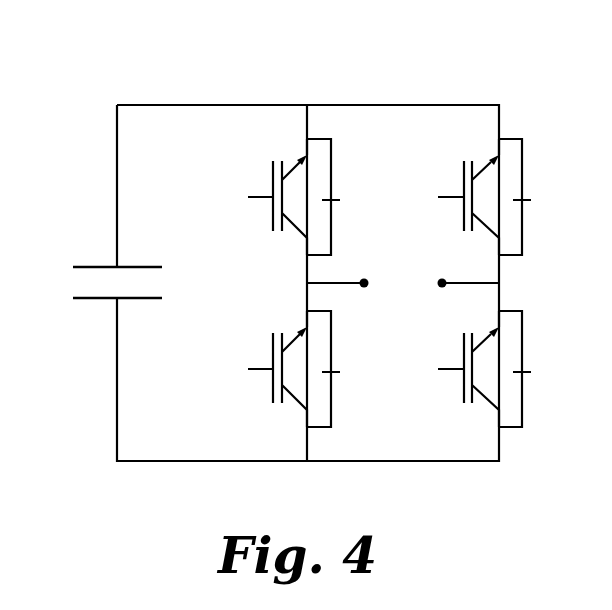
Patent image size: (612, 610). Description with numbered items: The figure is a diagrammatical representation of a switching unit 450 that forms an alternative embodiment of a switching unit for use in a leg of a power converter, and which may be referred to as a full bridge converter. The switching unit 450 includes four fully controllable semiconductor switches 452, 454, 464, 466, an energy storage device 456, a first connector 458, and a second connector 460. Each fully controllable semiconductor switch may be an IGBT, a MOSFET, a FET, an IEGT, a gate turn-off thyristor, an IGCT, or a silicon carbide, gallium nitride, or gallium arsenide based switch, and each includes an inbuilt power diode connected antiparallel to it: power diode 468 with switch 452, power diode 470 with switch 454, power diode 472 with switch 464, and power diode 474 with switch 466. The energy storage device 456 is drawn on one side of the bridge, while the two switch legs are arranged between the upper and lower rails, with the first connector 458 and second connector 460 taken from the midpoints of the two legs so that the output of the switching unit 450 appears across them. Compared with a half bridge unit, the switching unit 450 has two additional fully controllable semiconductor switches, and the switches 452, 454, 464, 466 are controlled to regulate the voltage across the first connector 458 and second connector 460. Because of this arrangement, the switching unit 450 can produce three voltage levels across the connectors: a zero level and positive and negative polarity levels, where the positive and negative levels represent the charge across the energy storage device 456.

The switching unit 450 is at (98, 47).
The fully controllable semiconductor switch 452 is at (272, 214).
The fully controllable semiconductor switch 454 is at (272, 388).
The energy storage device 456 is at (80, 299).
The first connector 458 is at (364, 281).
The second connector 460 is at (441, 286).
The fully controllable semiconductor switch 464 is at (463, 218).
The fully controllable semiconductor switch 466 is at (463, 386).
The power diode 468 is at (333, 197).
The power diode 470 is at (333, 369).
The power diode 472 is at (524, 197).
The power diode 474 is at (524, 369).